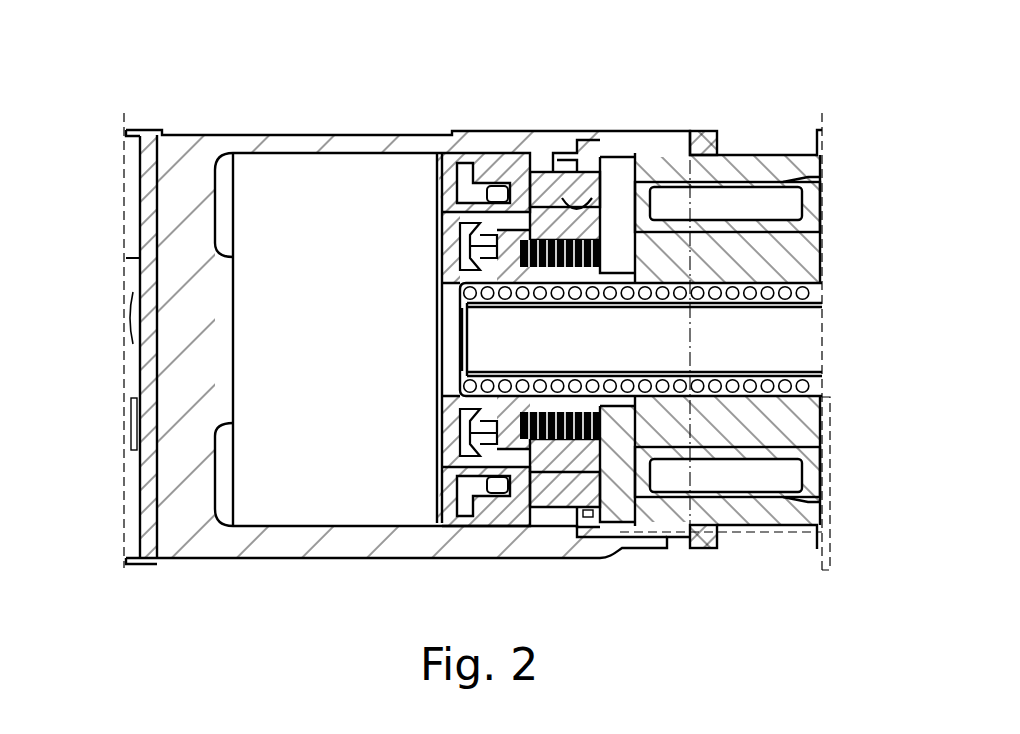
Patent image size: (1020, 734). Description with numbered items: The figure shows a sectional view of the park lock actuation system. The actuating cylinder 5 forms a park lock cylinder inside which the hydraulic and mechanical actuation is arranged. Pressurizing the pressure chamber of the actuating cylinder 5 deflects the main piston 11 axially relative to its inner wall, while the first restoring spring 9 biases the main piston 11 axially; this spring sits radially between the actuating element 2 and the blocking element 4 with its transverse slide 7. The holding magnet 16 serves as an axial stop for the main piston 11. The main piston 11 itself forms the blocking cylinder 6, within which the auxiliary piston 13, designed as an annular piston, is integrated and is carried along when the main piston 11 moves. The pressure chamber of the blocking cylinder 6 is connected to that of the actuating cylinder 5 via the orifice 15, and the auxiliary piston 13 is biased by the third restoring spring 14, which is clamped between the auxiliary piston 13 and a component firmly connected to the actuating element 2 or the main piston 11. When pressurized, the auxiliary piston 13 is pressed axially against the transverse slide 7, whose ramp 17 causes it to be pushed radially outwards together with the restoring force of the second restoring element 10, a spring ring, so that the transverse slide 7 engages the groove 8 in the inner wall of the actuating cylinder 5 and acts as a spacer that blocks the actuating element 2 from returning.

The actuating element 2 is at (740, 386).
The blocking element 4 is at (598, 258).
The actuating cylinder 5 is at (350, 135).
The blocking cylinder 6 is at (490, 228).
The transverse slide 7 is at (590, 215).
The groove 8 is at (577, 160).
The first restoring spring 9 is at (718, 292).
The second restoring element 10 is at (557, 163).
The main piston 11 is at (520, 200).
The auxiliary piston 13 is at (507, 437).
The third restoring spring 14 is at (573, 437).
The orifice 15 is at (455, 430).
The holding magnet 16 is at (757, 535).
The ramp/inclined surface 17 is at (600, 195).